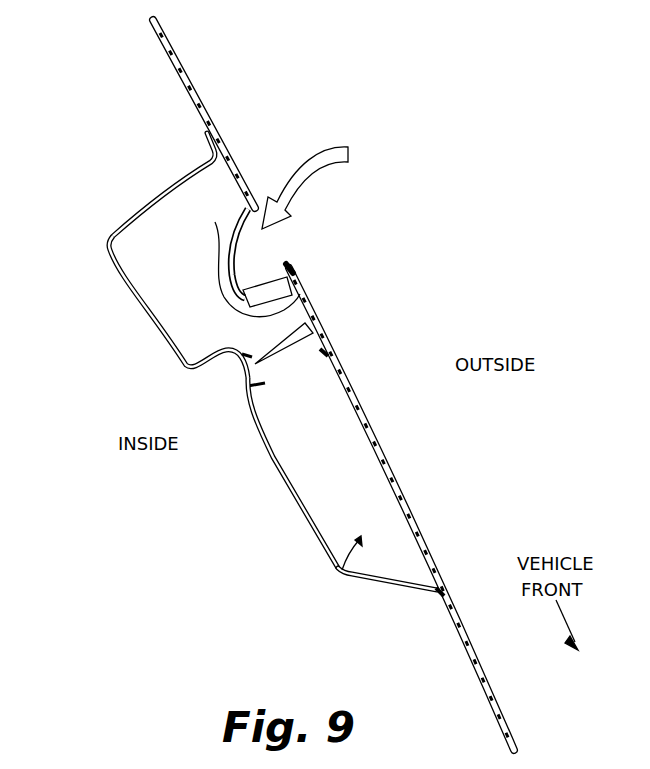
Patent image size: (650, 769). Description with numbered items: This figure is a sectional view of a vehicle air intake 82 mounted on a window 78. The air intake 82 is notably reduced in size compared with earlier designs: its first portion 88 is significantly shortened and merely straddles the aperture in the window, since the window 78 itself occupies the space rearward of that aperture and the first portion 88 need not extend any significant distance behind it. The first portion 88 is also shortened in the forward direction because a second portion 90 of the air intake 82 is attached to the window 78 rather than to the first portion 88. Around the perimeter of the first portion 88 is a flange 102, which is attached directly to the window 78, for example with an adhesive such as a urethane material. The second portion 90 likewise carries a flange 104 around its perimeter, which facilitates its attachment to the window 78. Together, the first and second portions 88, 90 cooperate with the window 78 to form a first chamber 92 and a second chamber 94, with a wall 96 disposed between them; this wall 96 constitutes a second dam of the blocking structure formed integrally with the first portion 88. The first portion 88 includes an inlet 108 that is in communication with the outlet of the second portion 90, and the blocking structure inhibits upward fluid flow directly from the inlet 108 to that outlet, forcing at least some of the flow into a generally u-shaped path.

The window 78 is at (190, 78).
The air intake 82 is at (229, 355).
The first portion 88 is at (236, 226).
The second portion 90 is at (170, 192).
The first chamber 92 is at (195, 344).
The second chamber 94 is at (338, 574).
The wall 96 is at (288, 346).
The flange 102 is at (322, 358).
The flange 104 is at (438, 593).
The inlet 108 is at (287, 265).